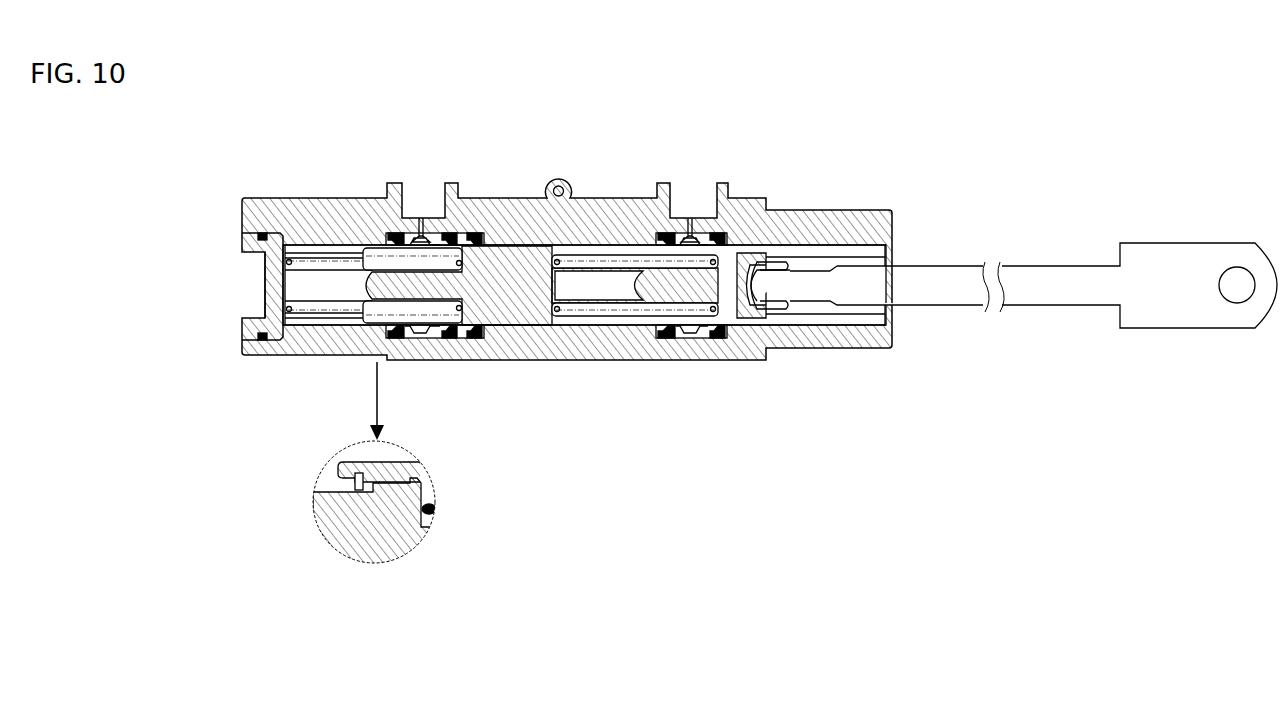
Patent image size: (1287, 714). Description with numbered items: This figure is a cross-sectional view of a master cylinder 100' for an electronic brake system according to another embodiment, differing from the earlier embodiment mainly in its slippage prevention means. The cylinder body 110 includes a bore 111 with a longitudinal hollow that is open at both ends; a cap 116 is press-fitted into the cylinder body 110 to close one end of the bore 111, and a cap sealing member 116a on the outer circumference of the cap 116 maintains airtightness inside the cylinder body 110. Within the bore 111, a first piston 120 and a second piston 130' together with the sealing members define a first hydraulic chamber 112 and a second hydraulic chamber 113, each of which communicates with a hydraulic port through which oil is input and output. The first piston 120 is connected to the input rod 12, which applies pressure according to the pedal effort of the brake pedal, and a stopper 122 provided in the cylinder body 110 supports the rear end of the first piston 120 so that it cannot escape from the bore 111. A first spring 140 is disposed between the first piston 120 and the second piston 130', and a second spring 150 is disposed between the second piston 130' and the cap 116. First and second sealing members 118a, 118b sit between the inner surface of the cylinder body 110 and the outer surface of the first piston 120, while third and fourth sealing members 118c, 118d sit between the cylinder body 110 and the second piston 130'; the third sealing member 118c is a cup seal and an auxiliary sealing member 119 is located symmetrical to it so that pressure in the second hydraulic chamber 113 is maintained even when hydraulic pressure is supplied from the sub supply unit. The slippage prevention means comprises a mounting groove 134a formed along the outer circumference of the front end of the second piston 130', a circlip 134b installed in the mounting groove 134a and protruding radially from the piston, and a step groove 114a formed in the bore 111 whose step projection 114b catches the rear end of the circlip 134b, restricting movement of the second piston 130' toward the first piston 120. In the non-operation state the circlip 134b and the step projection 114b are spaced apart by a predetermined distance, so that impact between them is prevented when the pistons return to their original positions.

The input rod 12 is at (1046, 276).
The master cylinder 100' is at (732, 276).
The cylinder body 110 is at (506, 203).
The bore 111 is at (609, 246).
The first hydraulic chamber 112 is at (622, 246).
The second hydraulic chamber 113 is at (330, 248).
The step groove 114a is at (328, 487).
The step projection 114b is at (403, 506).
The cap 116 is at (266, 278).
The cap sealing member 116a is at (262, 232).
The first sealing member 118a is at (716, 345).
The second sealing member 118b is at (664, 345).
The third sealing member 118c is at (448, 345).
The fourth sealing member 118d is at (400, 345).
The auxiliary sealing member 119 is at (476, 345).
The first piston 120 is at (750, 318).
The stopper 122 is at (892, 248).
The second piston 130' is at (457, 320).
The mounting groove 134a is at (343, 468).
The circlip 134b is at (362, 482).
The first spring 140 is at (572, 318).
The second spring 150 is at (290, 256).